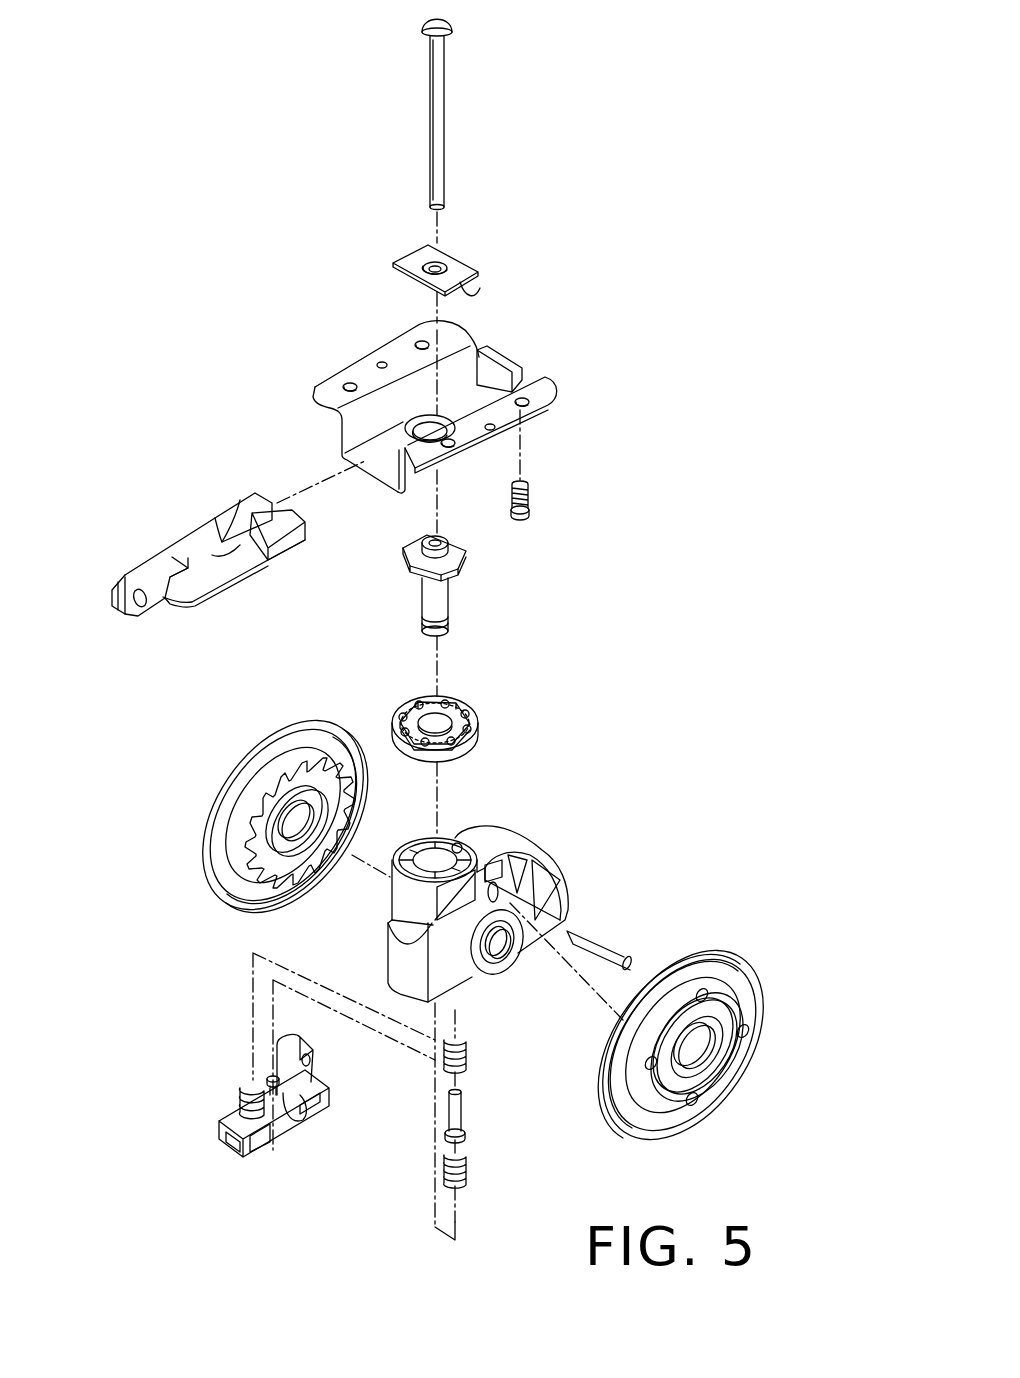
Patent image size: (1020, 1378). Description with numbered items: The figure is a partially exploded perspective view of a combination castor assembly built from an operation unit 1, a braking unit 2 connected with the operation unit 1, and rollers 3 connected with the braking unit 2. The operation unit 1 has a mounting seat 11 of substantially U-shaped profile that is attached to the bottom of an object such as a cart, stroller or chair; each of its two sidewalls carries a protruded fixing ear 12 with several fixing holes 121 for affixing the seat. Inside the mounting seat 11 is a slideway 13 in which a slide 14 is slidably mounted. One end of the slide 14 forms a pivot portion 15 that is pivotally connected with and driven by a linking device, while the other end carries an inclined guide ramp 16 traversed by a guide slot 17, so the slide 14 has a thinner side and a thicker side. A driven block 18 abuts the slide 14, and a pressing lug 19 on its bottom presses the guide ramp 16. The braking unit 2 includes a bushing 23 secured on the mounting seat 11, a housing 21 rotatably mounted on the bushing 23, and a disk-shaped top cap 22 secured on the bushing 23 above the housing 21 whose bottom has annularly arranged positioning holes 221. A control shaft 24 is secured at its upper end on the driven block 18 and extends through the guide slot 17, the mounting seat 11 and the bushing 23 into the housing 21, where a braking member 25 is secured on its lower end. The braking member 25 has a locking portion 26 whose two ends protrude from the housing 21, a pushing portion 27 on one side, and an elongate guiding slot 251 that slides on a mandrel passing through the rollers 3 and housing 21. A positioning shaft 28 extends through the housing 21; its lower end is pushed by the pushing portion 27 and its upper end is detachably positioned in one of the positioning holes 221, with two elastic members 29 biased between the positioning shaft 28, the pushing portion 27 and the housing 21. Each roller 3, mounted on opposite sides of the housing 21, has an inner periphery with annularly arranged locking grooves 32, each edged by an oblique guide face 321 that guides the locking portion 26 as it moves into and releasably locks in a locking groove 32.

The operation unit 1 is at (690, 326).
The braking unit 2 is at (662, 678).
The roller 3 is at (746, 948).
The mounting seat 11 is at (497, 375).
The fixing ear 12 is at (548, 393).
The fixing holes 121 is at (522, 403).
The slideway 13 is at (463, 380).
The slide 14 is at (207, 577).
The pivot portion 15 is at (130, 605).
The guide ramp 16 is at (257, 547).
The guide slot 17 is at (222, 520).
The driven block 18 is at (458, 273).
The pressing lug 19 is at (465, 296).
The housing 21 is at (498, 838).
The top cap 22 is at (477, 742).
The positioning holes 221 is at (460, 717).
The bushing 23 is at (442, 592).
The control shaft 24 is at (440, 145).
The braking member 25 is at (308, 1083).
The guiding slot 251 is at (300, 1113).
The locking portion 26 is at (602, 948).
The pushing portion 27 is at (273, 1080).
The positioning shaft 28 is at (458, 1111).
The elastic members 29 is at (467, 1054).
The locking grooves 32 is at (253, 814).
The oblique guide face 321 is at (250, 829).